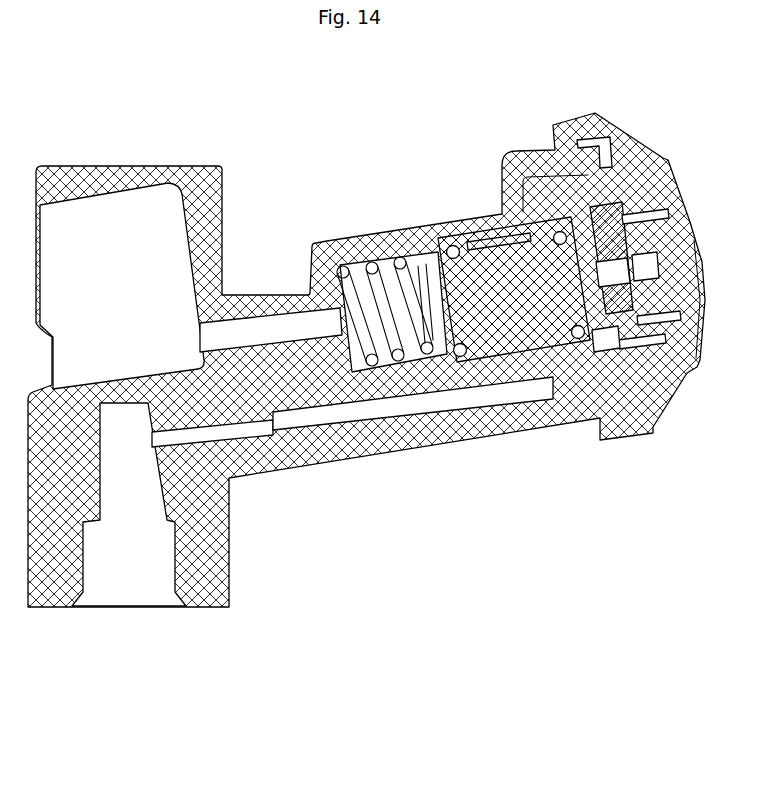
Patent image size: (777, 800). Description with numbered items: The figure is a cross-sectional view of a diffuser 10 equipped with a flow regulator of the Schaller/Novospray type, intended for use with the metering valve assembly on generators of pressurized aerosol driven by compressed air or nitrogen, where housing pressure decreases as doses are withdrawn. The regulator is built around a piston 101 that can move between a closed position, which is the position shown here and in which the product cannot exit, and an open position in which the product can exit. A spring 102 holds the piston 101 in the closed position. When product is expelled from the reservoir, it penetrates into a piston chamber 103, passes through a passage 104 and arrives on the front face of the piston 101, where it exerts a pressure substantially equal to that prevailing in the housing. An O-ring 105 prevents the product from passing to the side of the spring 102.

The diffuser 10 is at (490, 617).
The piston 101 is at (527, 297).
The spring 102 is at (400, 300).
The piston chamber 103 is at (514, 237).
The passage 104 is at (572, 345).
The O-ring 105 is at (463, 348).